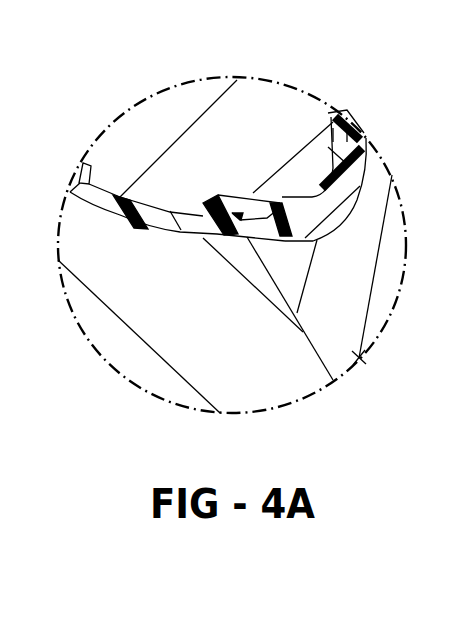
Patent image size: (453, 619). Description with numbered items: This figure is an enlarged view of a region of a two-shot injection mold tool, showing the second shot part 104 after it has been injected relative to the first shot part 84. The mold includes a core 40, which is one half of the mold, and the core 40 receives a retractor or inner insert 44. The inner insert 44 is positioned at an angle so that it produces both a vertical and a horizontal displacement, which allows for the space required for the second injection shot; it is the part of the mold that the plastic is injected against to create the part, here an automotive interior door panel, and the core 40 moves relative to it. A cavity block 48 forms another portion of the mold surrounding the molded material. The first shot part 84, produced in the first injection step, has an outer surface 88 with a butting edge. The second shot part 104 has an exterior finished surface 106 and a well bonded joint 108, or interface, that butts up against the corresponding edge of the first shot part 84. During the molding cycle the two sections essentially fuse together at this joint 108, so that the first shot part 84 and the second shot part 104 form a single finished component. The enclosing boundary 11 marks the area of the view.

The vehicle body boundary 11 is at (255, 245).
The core 40 is at (115, 345).
The inner insert 44 is at (358, 358).
The cavity block 48 is at (163, 122).
The first shot part 84 is at (337, 122).
The outer surface 88 is at (106, 222).
The second shot part 104 is at (360, 142).
The exterior finished surface 106 is at (393, 174).
The well bonded joint 108 is at (247, 240).